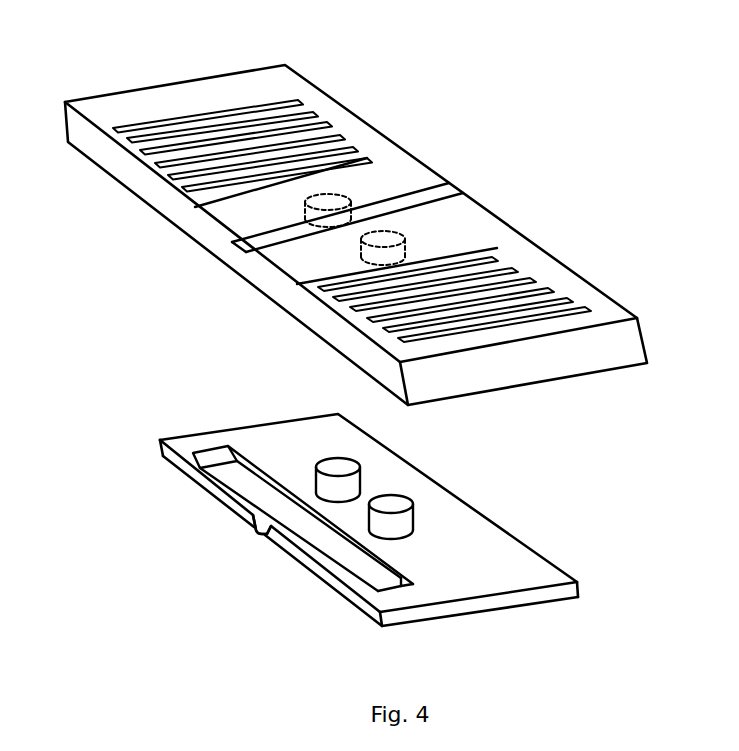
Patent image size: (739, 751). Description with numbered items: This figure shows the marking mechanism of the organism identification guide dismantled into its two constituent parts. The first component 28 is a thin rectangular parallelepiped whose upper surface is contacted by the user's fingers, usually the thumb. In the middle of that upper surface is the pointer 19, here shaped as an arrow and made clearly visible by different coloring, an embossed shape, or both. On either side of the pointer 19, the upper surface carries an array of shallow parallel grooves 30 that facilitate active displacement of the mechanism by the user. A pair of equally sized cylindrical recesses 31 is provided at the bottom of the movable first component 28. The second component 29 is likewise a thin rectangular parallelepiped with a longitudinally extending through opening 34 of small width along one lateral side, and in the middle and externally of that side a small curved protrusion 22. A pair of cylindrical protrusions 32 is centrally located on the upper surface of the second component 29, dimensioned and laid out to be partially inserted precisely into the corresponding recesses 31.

The pointer 19 is at (327, 229).
The protrusion of curved shape 22 is at (254, 531).
The first component 28 is at (98, 172).
The second component 29 is at (552, 553).
The grooves 30 is at (229, 147).
The recesses of cylindrical shape 31 is at (388, 243).
The protrusions of cylindrical shape 32 is at (362, 472).
The through opening 34 is at (231, 465).